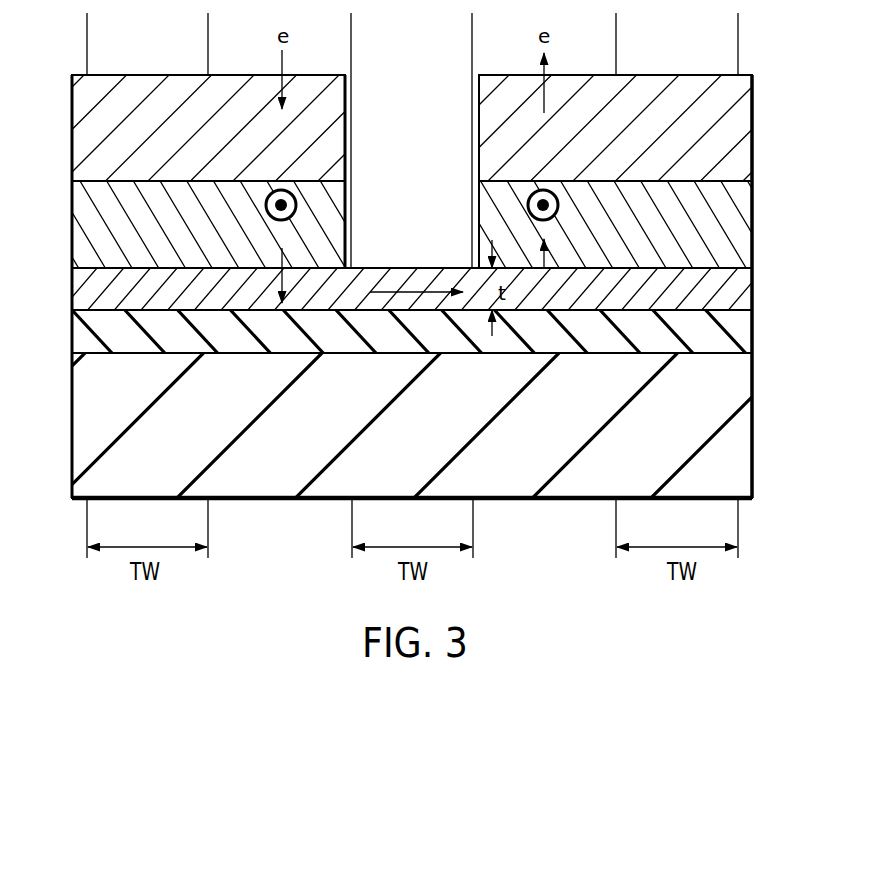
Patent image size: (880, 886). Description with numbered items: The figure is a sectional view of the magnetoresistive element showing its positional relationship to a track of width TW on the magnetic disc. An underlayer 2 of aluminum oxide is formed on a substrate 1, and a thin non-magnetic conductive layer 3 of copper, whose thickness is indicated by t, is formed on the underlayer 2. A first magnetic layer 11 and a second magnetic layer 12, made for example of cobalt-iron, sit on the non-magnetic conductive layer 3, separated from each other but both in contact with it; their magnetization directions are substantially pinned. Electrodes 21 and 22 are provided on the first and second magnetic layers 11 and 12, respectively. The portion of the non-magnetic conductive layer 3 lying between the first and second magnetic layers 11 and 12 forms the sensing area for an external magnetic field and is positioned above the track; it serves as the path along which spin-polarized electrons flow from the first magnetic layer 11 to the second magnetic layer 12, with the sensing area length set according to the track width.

The substrate 1 is at (740, 422).
The underlayer 2 is at (740, 335).
The non-magnetic conductive layer 3 is at (740, 294).
The first magnetic layer 11 is at (82, 206).
The second magnetic layer 12 is at (740, 193).
The electrode 21 is at (82, 101).
The electrode 22 is at (740, 97).